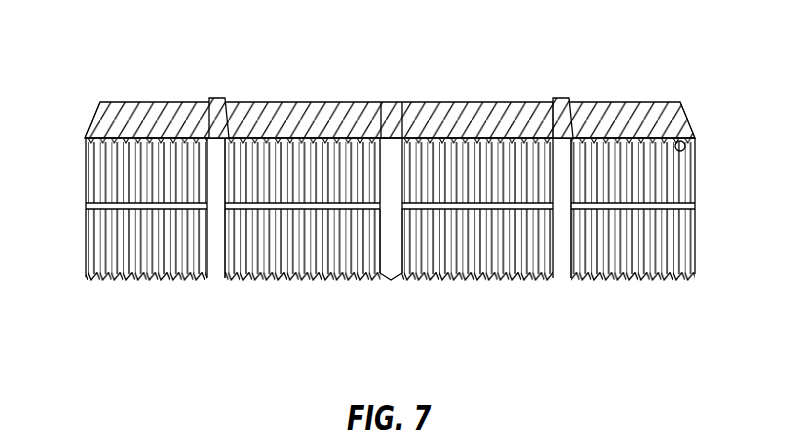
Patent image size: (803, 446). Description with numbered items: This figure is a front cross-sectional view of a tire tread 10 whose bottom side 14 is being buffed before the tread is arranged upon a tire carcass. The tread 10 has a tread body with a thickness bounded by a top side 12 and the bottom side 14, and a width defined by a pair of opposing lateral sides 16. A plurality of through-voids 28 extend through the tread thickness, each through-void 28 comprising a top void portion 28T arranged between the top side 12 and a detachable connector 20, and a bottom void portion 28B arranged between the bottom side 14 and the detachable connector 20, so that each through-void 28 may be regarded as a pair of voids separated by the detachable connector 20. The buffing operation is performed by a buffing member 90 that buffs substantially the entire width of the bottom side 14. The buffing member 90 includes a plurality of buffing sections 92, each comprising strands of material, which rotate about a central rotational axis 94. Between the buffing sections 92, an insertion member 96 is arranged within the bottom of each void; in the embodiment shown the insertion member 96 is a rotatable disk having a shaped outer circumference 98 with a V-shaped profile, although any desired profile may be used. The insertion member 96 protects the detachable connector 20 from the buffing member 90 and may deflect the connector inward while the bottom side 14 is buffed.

The tread 10 is at (394, 191).
The top side 12 is at (628, 121).
The bottom side 14 is at (678, 140).
The lateral sides 16 is at (95, 124).
The detachable connector 20 is at (567, 98).
The through-void 28 is at (402, 103).
The bottom void portion 28B is at (377, 136).
The top void portion 28T is at (553, 130).
The buffing member 90 is at (424, 245).
The buffing sections 92 is at (125, 279).
The central rotational axis 94 is at (688, 207).
The insertion member 96 is at (207, 270).
The shaped outer circumference 98 is at (220, 277).